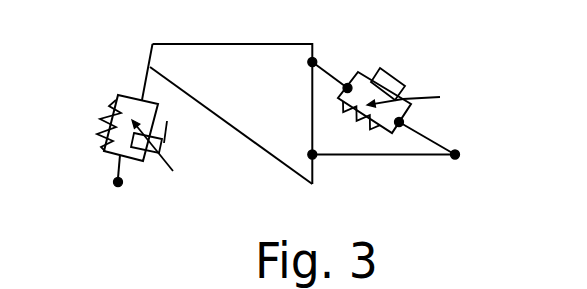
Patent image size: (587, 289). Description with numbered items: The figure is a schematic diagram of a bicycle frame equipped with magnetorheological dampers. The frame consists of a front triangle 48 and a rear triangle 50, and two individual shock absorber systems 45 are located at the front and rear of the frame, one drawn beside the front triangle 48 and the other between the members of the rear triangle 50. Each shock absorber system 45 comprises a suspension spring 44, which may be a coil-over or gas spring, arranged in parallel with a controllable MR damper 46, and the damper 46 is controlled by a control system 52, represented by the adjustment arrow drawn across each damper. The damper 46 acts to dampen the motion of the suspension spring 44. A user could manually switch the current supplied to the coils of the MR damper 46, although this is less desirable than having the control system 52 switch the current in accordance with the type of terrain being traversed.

The suspension spring 44 is at (110, 115).
The shock absorber system 45 is at (88, 158).
The controllable MR damper 46 is at (163, 143).
The front triangle 48 is at (231, 96).
The rear triangle 50 is at (343, 141).
The control system 52 is at (173, 171).